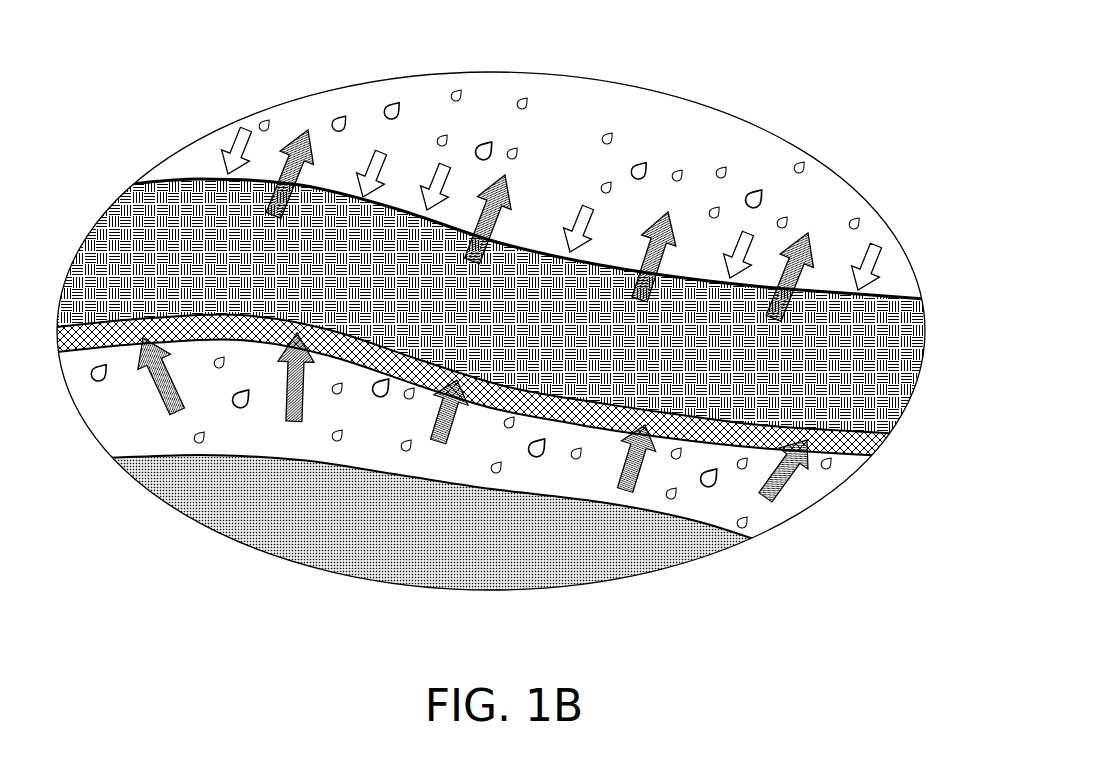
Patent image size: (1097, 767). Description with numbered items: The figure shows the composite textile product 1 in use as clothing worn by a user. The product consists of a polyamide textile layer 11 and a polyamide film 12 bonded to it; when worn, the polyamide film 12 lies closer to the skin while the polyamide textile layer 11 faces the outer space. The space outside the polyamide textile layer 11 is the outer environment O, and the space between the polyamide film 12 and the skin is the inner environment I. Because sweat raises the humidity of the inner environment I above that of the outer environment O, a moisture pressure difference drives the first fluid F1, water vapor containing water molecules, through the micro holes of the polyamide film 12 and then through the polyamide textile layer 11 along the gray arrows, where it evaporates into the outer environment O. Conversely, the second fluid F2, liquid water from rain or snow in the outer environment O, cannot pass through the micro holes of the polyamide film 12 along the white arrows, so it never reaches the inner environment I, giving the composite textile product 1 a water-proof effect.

The composite textile product 1 is at (509, 302).
The polyamide textile layer 11 is at (897, 382).
The polyamide film 12 is at (870, 442).
The outer environment O is at (587, 105).
The inner environment I is at (630, 552).
The first fluid F1 is at (103, 376).
The second fluid F2 is at (392, 104).